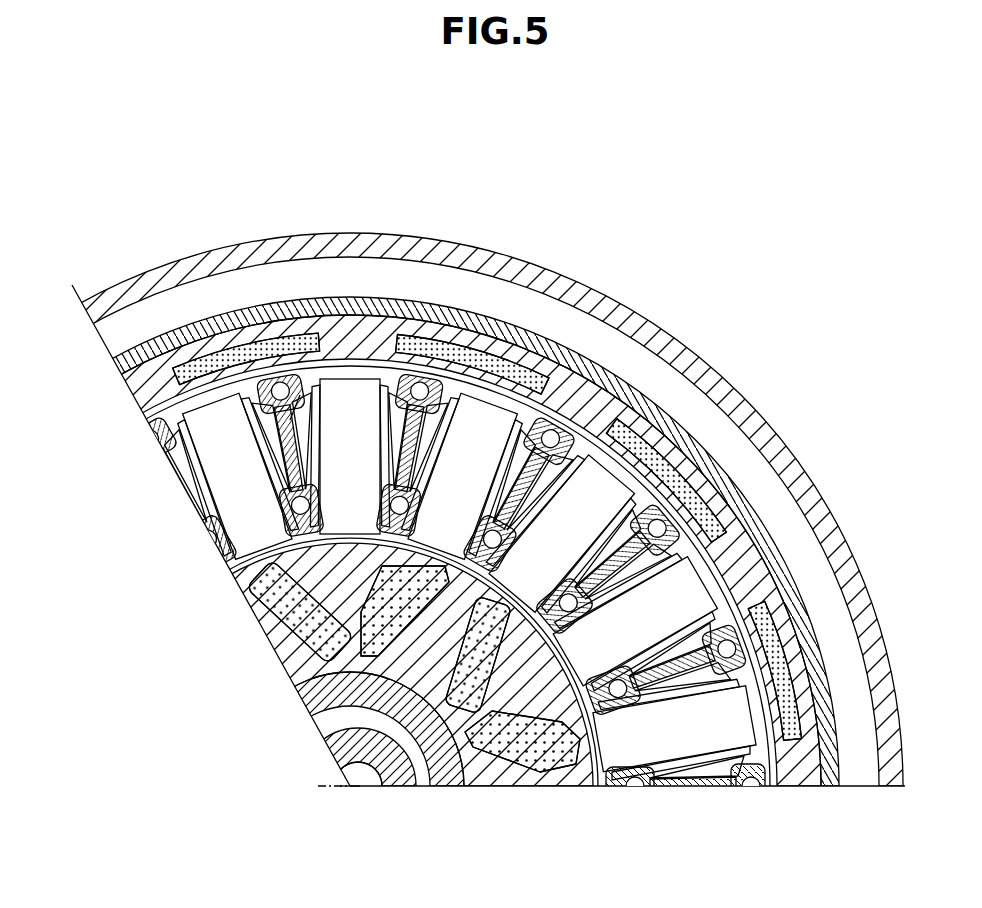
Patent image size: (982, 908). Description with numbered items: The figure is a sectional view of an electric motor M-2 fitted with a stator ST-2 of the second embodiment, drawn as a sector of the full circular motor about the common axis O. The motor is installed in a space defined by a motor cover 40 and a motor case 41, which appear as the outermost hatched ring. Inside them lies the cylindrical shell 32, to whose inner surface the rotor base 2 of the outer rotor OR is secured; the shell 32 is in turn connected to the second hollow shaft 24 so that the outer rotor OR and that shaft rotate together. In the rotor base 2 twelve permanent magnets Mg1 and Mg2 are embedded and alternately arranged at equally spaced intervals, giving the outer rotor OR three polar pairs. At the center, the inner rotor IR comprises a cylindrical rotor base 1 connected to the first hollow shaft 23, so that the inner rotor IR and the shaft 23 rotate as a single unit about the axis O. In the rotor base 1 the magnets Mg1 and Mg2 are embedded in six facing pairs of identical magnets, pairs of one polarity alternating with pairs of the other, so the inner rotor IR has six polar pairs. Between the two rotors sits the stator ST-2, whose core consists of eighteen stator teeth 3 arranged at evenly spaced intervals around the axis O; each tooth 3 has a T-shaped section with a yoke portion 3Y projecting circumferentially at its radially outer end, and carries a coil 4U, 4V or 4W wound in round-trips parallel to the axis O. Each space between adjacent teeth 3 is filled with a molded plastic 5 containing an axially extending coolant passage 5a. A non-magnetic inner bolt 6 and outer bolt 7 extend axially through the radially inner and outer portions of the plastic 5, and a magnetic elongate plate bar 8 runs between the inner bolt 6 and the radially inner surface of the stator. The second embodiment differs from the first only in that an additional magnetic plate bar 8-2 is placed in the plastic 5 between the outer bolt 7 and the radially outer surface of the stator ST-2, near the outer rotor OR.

The electric motor M-2 is at (687, 90).
The motor cover 40 is at (781, 461).
The motor case 41 is at (459, 509).
The cylindrical shell 32 is at (835, 786).
The rotor base 2 is at (413, 538).
The outer bolt 7 is at (232, 395).
The outer rotor OR is at (437, 538).
The permanent magnet Mg2 is at (245, 358).
The permanent magnet Mg1 is at (470, 348).
The inner rotor IR is at (350, 711).
The rotor base 1 is at (533, 770).
The first hollow shaft 23 is at (410, 765).
The second hollow shaft 24 is at (368, 780).
The common axis O is at (350, 790).
The stator ST-2 is at (440, 575).
The stator tooth 3 is at (206, 453).
The molded plastic 5 is at (300, 440).
The coolant passage 5a is at (310, 415).
The inner bolt 6 is at (305, 505).
The elongate plate bar 8 is at (205, 548).
The elongate magnetic plate bar 8-2 is at (168, 420).
The coil 4W is at (188, 400).
The coil 4V is at (350, 372).
The coil 4U is at (535, 400).
The yoke portion 3Y is at (300, 395).